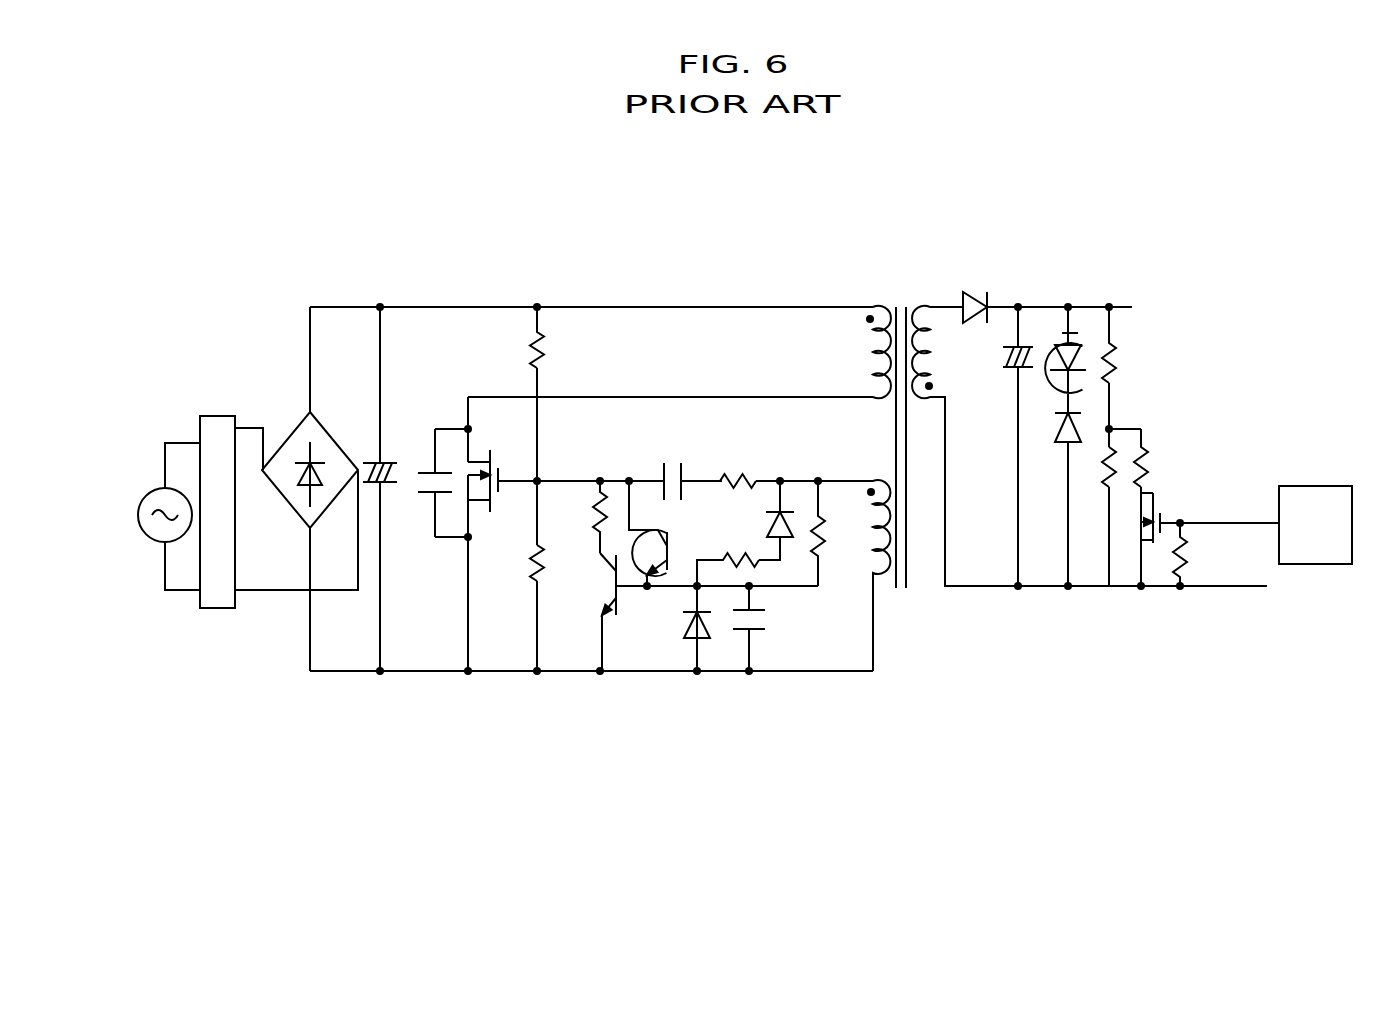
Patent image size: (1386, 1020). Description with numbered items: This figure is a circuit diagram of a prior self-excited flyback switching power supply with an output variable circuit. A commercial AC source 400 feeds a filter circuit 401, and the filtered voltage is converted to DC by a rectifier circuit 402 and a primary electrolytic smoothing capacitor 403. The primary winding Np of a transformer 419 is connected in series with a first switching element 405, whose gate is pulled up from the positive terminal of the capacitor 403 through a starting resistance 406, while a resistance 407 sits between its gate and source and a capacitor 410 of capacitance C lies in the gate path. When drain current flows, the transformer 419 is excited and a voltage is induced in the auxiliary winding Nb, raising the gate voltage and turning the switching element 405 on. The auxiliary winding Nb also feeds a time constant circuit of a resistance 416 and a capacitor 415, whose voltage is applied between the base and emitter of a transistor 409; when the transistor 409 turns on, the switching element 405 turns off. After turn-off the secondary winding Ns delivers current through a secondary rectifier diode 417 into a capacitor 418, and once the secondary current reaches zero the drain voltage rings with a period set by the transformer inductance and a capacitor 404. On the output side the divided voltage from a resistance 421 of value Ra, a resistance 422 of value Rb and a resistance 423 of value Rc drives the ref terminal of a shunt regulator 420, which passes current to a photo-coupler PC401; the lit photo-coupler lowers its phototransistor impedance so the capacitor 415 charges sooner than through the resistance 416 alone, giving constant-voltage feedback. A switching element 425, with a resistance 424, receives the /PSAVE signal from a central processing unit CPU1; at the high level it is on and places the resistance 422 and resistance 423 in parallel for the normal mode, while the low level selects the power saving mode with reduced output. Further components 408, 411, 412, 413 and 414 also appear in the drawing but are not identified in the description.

The commercial alternating current source 400 is at (150, 492).
The filter circuit 401 is at (215, 416).
The rectifier circuit 402 is at (289, 436).
The primary electrolytic capacitor 403 is at (388, 460).
The capacitor 404 is at (424, 495).
The first switching element 405 is at (497, 466).
The starting resistance 406 is at (532, 342).
The resistance 407 is at (534, 571).
The resistor 408 is at (597, 507).
The transistor 409 is at (605, 607).
The capacitor 410 is at (681, 465).
The resistor 411 is at (745, 475).
The diode 412 is at (790, 510).
The resistor 413 is at (730, 555).
The diode 414 is at (685, 634).
The capacitor 415 is at (768, 622).
The resistance 416 is at (825, 550).
The secondary rectifier diode 417 is at (990, 291).
The capacitor 418 is at (1008, 369).
The transformer 419 is at (901, 307).
The shunt regulator 420 is at (1062, 444).
The resistance 421 is at (1118, 370).
The resistance 422 is at (1117, 455).
The resistance 423 is at (1150, 470).
The resistance 424 is at (1190, 560).
The switching element 425 is at (1154, 508).
The photo-coupler PC401 is at (658, 522).
The central processing unit CPU1 is at (1315, 525).